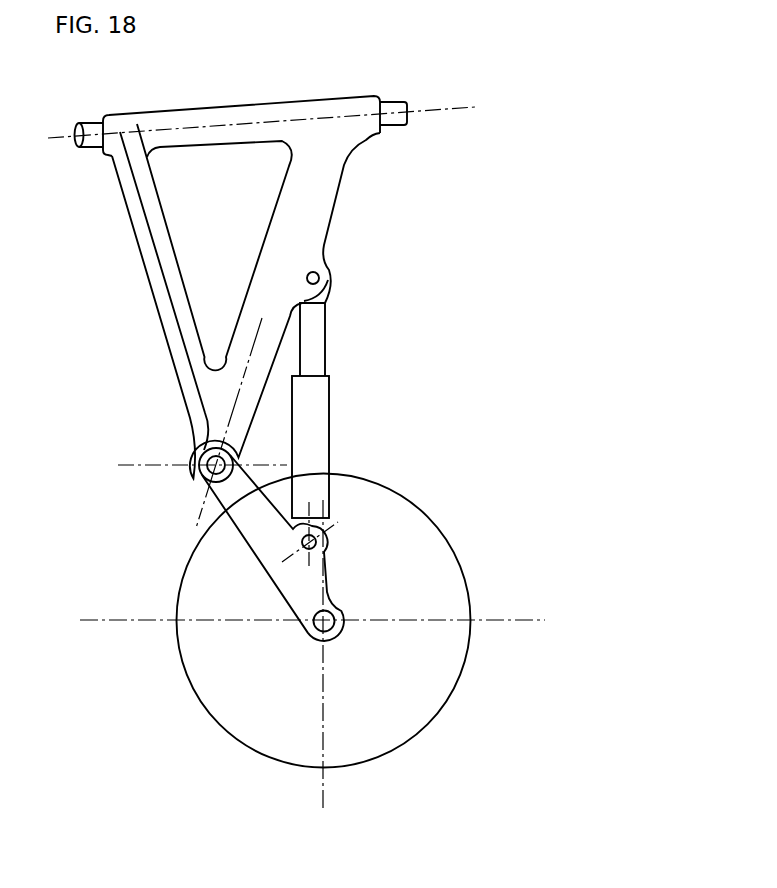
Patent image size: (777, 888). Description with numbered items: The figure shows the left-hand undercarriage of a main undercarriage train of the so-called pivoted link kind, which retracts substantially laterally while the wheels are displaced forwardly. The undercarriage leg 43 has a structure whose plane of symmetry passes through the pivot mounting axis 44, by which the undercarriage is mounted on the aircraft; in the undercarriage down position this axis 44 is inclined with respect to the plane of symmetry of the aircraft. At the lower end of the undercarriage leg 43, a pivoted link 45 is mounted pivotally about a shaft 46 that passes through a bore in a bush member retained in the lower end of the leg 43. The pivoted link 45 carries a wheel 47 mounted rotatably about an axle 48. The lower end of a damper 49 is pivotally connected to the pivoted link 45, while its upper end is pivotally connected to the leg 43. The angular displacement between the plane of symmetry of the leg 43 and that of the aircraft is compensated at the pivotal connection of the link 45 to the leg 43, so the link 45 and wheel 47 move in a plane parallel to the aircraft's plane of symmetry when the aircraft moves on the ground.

The undercarriage leg 43 is at (302, 217).
The pivot mounting axis 44 is at (92, 142).
The pivoted link 45 is at (270, 548).
The shaft 46 is at (205, 452).
The wheel 47 is at (396, 697).
The axle 48 is at (308, 637).
The damper 49 is at (312, 418).